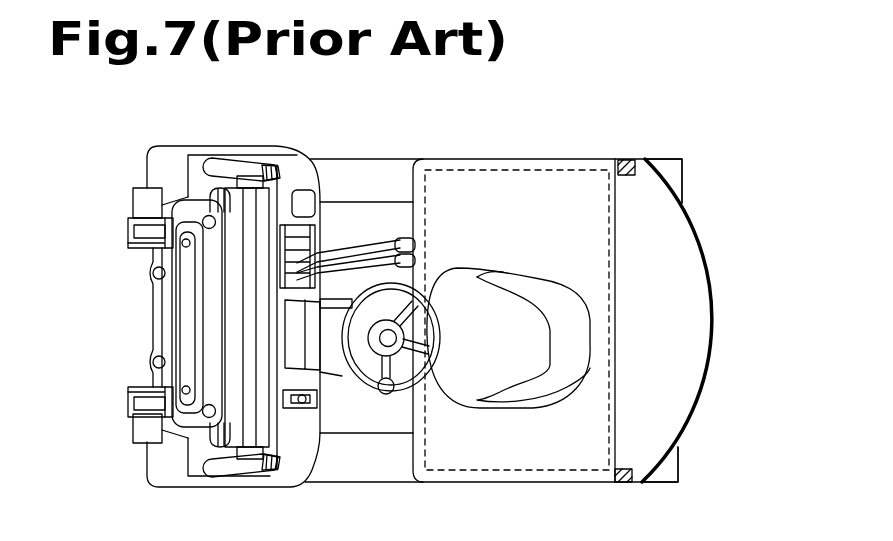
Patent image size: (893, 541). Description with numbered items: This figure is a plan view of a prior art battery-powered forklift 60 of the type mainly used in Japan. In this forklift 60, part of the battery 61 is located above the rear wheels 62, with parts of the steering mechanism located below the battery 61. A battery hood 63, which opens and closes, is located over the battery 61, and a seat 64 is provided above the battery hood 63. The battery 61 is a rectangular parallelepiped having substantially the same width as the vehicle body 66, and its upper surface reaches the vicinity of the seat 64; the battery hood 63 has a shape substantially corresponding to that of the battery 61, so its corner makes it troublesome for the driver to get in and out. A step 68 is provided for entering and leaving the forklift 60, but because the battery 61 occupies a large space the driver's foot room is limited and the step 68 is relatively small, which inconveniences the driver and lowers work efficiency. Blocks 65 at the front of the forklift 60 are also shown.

The forklift 60 is at (719, 247).
The battery 61 is at (483, 472).
The rear wheels 62 is at (680, 170).
The battery hood 63 is at (587, 418).
The seat 64 is at (523, 282).
The fork mounting blocks 65 is at (157, 163).
The vehicle body 66 is at (690, 423).
The step 68 is at (370, 167).